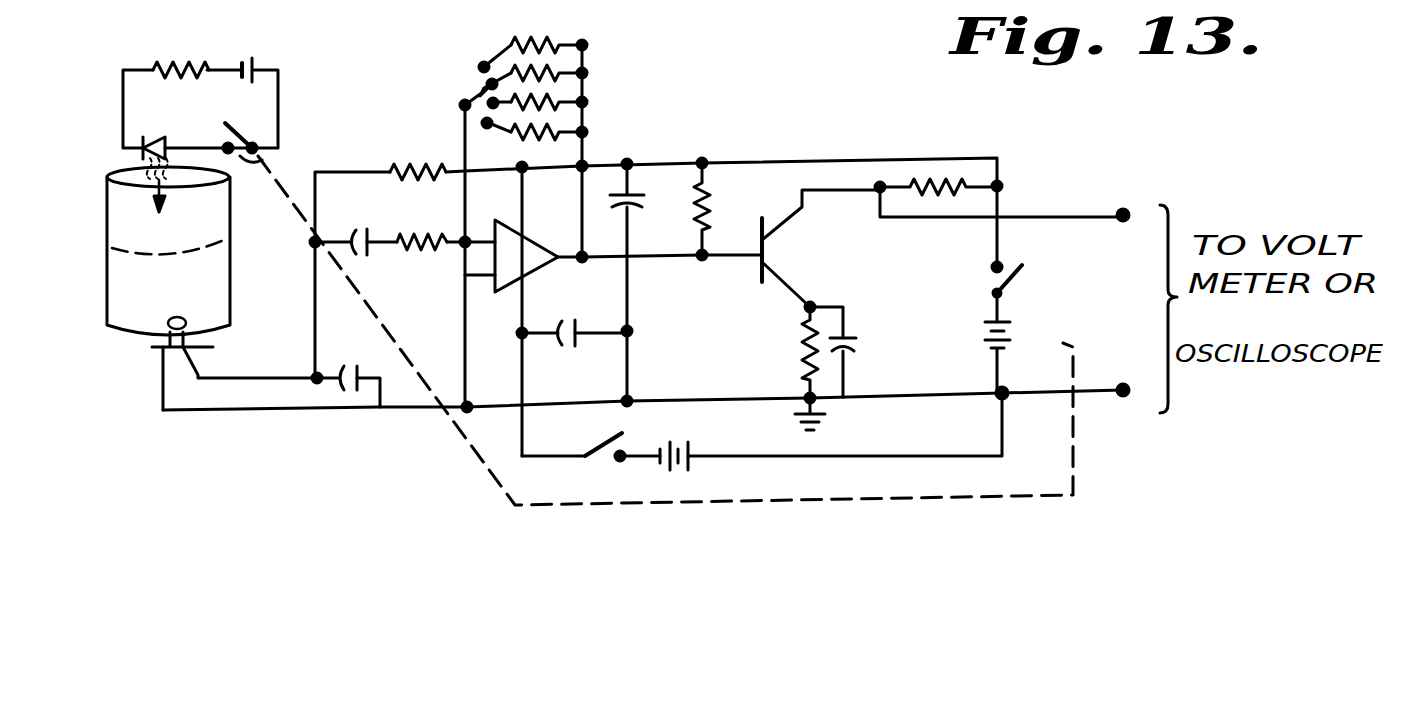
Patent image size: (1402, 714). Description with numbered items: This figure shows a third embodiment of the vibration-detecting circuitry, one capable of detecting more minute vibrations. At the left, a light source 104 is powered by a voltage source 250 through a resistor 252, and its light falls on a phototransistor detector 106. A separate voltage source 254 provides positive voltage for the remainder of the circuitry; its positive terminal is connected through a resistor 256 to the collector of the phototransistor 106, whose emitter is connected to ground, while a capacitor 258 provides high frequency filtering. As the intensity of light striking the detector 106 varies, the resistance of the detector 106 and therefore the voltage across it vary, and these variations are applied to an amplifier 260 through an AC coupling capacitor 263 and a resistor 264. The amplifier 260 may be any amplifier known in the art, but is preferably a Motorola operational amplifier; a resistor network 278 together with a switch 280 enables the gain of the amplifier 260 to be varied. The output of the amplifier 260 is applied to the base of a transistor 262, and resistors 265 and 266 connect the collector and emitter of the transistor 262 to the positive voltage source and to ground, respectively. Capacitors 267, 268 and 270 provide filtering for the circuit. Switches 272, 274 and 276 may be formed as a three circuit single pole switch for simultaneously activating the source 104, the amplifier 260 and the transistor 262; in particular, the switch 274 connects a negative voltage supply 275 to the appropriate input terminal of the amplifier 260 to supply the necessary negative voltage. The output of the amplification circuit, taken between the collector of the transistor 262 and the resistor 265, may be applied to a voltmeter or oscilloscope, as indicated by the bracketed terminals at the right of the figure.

The source 104 is at (143, 147).
The phototransistor 106 is at (150, 352).
The voltage source 250 is at (243, 98).
The resistor 252 is at (192, 60).
The voltage source 254 is at (1033, 345).
The resistor 256 is at (444, 164).
The capacitor 258 is at (350, 390).
The amplifier 260 is at (535, 243).
The transistor 262 is at (815, 267).
The AC coupling capacitor 263 is at (360, 252).
The resistor 264 is at (443, 210).
The resistor 265 is at (960, 184).
The resistor 266 is at (798, 350).
The capacitor 267 is at (632, 206).
The capacitor 268 is at (580, 322).
The capacitor 270 is at (850, 350).
The switch 272 is at (1005, 263).
The switch 274 is at (612, 447).
The negative voltage supply 275 is at (693, 449).
The switch 276 is at (262, 160).
The resistor network 278 is at (595, 82).
The switch 280 is at (460, 103).